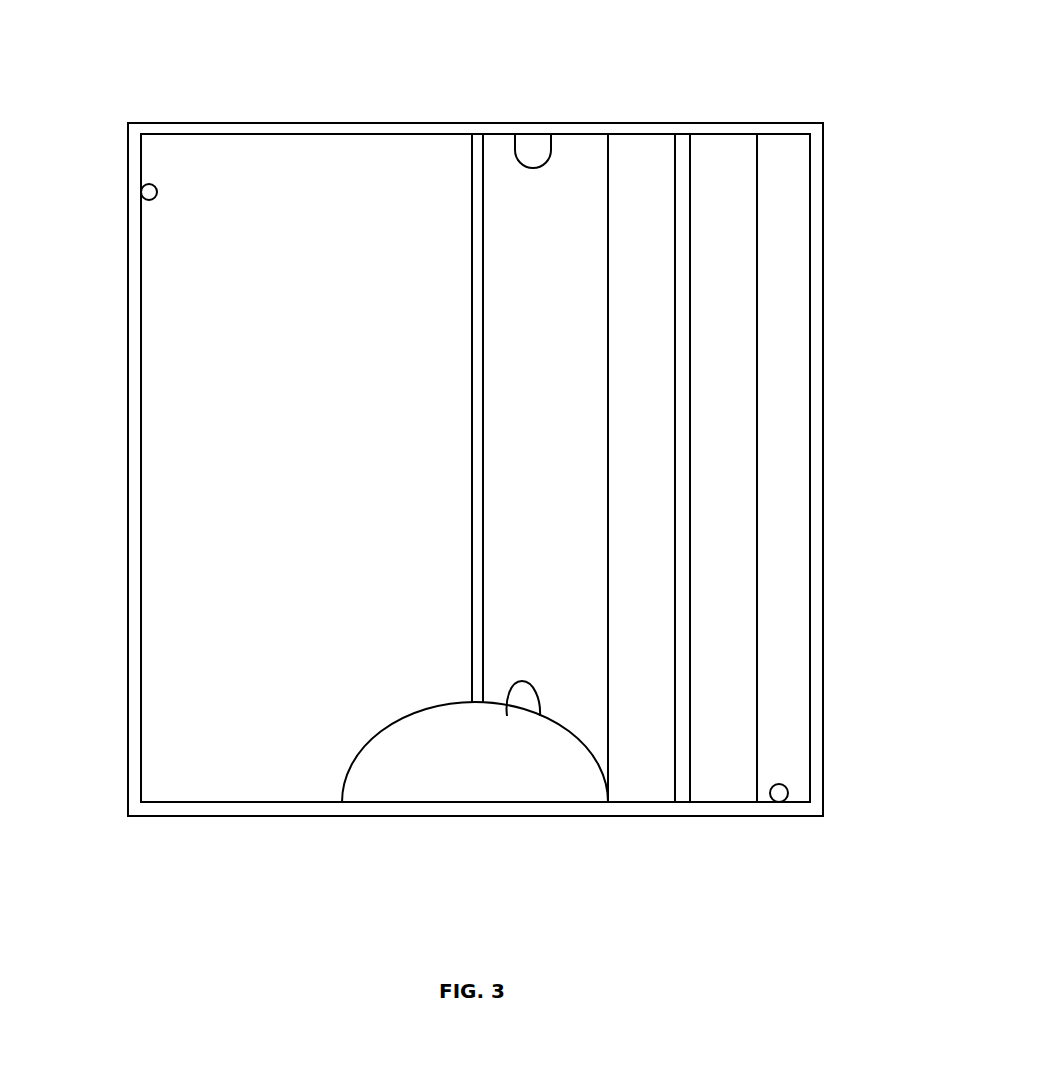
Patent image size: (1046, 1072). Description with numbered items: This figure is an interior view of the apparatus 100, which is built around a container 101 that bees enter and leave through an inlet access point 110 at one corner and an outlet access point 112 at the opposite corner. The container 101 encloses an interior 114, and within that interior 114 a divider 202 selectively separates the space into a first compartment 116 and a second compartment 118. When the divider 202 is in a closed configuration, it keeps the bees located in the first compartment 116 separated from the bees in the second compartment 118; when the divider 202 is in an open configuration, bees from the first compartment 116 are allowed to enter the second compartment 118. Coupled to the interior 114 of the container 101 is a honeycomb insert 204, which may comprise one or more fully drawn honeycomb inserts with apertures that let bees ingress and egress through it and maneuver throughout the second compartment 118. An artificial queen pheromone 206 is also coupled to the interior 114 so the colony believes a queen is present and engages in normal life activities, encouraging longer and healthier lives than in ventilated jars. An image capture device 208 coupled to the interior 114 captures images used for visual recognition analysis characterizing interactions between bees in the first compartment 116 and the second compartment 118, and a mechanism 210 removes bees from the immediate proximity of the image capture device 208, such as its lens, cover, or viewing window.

The apparatus 100 is at (863, 553).
The container 101 is at (127, 389).
The inlet access point 110 is at (148, 193).
The outlet access point 112 is at (779, 795).
The interior 114 is at (300, 175).
The first compartment 116 is at (194, 781).
The second compartment 118 is at (794, 672).
The divider 202 is at (477, 142).
The honeycomb insert 204 is at (638, 157).
The artificial queen pheromone 206 is at (533, 142).
The image capture device 208 is at (385, 785).
The mechanism 210 is at (521, 703).